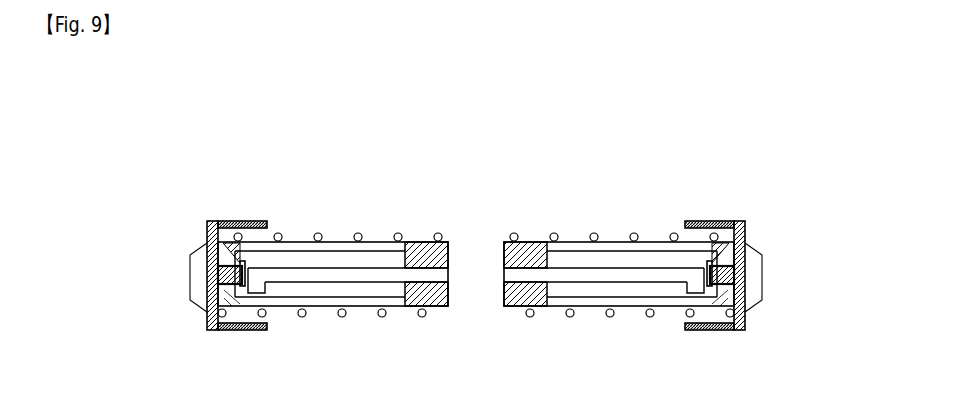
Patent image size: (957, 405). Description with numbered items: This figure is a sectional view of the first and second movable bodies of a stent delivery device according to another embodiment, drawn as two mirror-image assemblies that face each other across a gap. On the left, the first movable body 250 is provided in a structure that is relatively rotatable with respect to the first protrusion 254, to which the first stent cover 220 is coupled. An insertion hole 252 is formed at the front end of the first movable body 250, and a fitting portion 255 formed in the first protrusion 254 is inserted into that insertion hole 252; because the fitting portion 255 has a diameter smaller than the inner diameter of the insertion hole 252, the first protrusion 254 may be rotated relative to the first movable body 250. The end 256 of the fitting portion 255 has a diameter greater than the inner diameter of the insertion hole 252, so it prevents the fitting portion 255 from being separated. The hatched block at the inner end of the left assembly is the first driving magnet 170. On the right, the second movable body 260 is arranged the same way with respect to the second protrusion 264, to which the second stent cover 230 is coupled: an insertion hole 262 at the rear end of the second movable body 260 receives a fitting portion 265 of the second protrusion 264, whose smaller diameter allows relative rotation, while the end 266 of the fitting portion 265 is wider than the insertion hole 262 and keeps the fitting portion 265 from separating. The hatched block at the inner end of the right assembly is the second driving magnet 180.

The first movable body 250 is at (362, 162).
The second movable body 260 is at (623, 162).
The first stent cover 220 is at (237, 220).
The second stent cover 230 is at (715, 220).
The first driving magnet 170 is at (421, 241).
The second driving magnet 180 is at (531, 241).
The insertion hole 252 is at (207, 243).
The insertion hole 262 is at (745, 243).
The fitting portion 255 is at (190, 272).
The fitting portion 265 is at (762, 272).
The first protrusion 254 is at (207, 313).
The second protrusion 264 is at (745, 313).
The end of the fitting portion 256 is at (246, 288).
The end of the fitting portion 266 is at (706, 288).